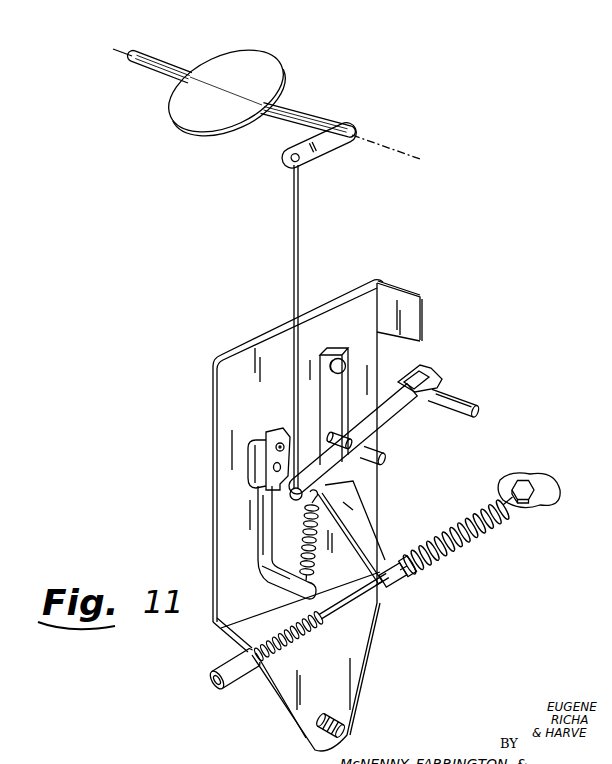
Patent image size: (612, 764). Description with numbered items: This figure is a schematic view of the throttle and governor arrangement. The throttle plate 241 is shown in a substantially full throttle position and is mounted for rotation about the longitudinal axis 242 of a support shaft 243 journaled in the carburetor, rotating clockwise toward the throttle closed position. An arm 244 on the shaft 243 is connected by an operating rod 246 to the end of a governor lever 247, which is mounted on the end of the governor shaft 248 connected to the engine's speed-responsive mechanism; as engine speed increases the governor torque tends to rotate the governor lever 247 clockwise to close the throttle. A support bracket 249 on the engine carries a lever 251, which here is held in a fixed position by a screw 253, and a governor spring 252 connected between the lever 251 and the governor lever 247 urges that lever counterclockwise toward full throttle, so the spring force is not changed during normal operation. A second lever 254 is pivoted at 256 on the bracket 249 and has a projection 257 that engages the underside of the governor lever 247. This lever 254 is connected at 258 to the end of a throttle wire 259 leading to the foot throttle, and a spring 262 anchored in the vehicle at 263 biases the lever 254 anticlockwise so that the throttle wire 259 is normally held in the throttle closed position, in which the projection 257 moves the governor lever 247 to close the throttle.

The throttle plate 241 is at (258, 62).
The longitudinal axis 242 is at (403, 148).
The support shaft 243 is at (305, 110).
The arm 244 is at (318, 148).
The operating rod 246 is at (292, 238).
The governor lever 247 is at (403, 410).
The governor shaft 248 is at (462, 402).
The support bracket 249 is at (374, 497).
The lever 251 is at (266, 524).
The governor spring 252 is at (300, 594).
The screw 253 is at (282, 430).
The lever 254 is at (345, 383).
The pivot 256 is at (338, 358).
The projection 257 is at (383, 458).
The connection 258 is at (405, 580).
The throttle wire 259 is at (350, 607).
The spring 262 is at (480, 530).
The anchor 263 is at (527, 484).